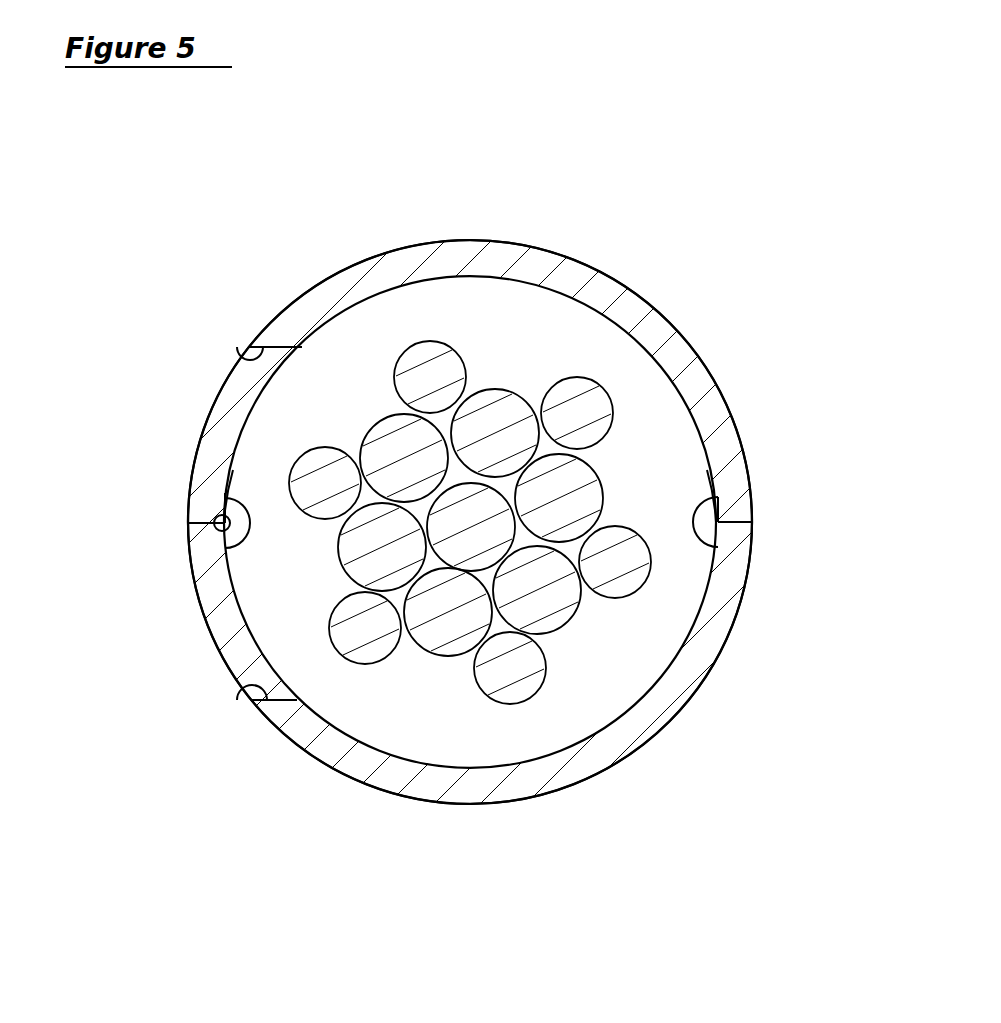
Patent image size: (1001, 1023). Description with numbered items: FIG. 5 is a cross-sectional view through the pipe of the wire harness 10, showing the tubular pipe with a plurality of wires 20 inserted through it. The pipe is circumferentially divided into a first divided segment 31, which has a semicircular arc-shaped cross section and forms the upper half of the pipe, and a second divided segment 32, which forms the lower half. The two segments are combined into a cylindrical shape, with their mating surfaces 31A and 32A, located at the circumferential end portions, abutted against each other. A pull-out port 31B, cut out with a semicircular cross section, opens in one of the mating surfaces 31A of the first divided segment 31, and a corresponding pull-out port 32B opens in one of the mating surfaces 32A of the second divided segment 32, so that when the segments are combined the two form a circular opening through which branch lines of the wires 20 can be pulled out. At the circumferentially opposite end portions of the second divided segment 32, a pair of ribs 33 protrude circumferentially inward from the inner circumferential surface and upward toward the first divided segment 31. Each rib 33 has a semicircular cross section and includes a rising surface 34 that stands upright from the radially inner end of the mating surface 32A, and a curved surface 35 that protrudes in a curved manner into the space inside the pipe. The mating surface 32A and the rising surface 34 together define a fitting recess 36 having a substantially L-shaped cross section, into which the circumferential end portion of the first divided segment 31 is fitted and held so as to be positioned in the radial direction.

The wire harness 10 is at (478, 104).
The wires 20 is at (508, 397).
The first divided segment 31 is at (493, 257).
The second divided segment 32 is at (462, 802).
The mating surfaces 31A is at (197, 527).
The mating surfaces 32A is at (205, 520).
The pull-out port 31B is at (243, 358).
The pull-out ports 32B is at (237, 685).
The ribs 33 is at (232, 630).
The rising surface 34 is at (222, 513).
The curved surface 35 is at (247, 495).
The fitting recess 36 is at (233, 530).